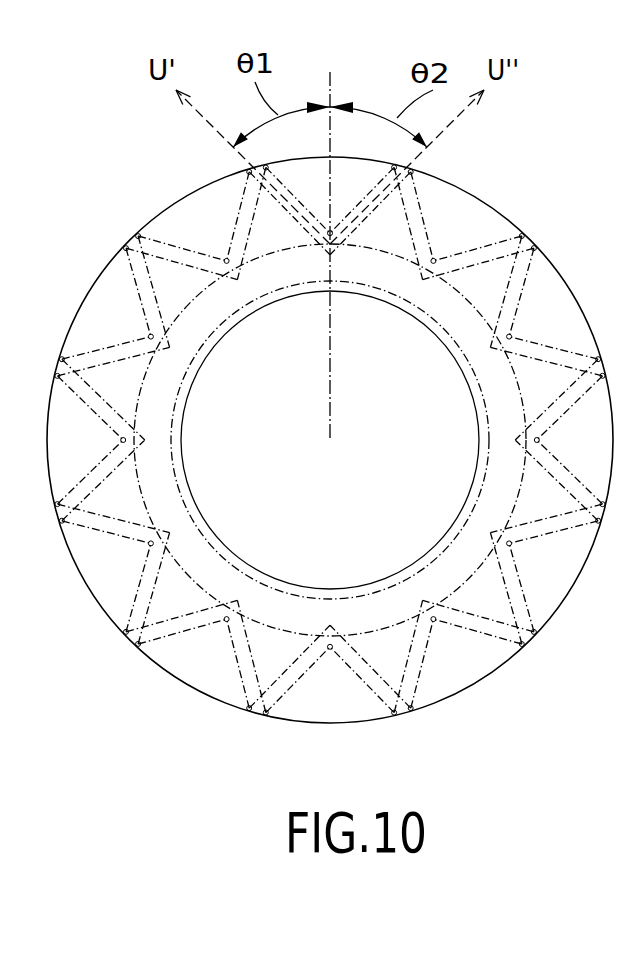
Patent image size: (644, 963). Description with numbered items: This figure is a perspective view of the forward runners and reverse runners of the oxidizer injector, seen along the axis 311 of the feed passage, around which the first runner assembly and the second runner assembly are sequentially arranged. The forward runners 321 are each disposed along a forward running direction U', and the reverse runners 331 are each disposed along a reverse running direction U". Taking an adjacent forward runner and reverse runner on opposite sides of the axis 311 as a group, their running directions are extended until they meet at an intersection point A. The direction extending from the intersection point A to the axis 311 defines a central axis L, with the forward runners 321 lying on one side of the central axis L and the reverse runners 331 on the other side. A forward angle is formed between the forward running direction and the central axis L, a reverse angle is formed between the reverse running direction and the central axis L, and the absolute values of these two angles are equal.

The axis 311 is at (330, 440).
The forward runners 321 is at (280, 202).
The reverse runners 331 is at (400, 210).
The central axis L is at (332, 86).
The intersection point A is at (330, 246).